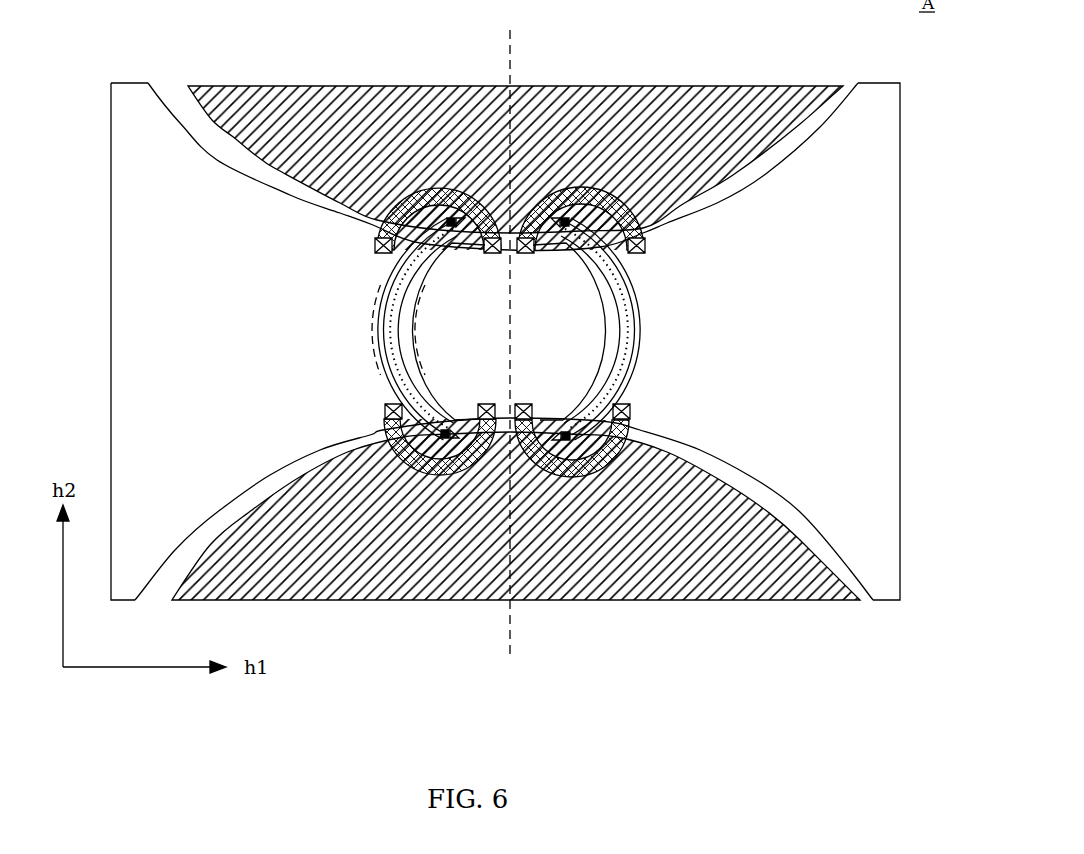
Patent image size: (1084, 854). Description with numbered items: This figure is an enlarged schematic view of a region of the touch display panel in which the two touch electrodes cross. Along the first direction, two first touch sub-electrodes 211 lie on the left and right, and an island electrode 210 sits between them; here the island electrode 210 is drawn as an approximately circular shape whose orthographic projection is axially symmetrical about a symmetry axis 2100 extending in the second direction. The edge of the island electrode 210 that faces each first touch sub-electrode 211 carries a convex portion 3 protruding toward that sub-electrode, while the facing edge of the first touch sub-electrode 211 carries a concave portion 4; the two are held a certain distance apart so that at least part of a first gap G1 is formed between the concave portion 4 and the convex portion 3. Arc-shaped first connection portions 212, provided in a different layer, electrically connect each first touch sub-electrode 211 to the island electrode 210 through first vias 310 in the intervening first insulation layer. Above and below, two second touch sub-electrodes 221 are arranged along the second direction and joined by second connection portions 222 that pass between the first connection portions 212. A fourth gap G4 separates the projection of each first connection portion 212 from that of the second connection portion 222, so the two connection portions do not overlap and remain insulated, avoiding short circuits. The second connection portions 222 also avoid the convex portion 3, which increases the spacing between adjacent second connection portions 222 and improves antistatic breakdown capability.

The first touch sub-electrode 211 is at (245, 273).
The second touch sub-electrode 221 is at (327, 178).
The second connection portion 222 is at (430, 420).
The first connection portion 212 is at (440, 203).
The first via 310 is at (377, 226).
The island electrode 210 is at (553, 267).
The symmetry axis 2100 is at (513, 42).
The convex portion 3 is at (412, 356).
The concave portion 4 is at (372, 337).
The first gap G1 is at (640, 313).
The fourth gap G4 is at (450, 218).